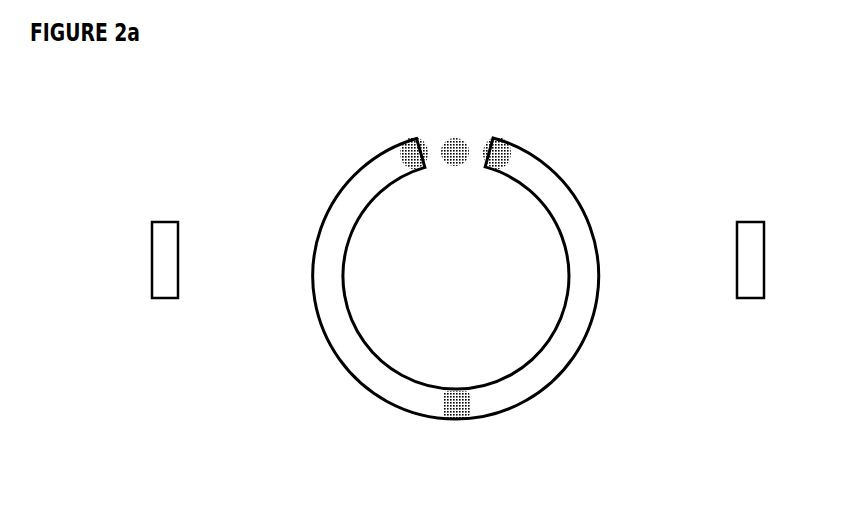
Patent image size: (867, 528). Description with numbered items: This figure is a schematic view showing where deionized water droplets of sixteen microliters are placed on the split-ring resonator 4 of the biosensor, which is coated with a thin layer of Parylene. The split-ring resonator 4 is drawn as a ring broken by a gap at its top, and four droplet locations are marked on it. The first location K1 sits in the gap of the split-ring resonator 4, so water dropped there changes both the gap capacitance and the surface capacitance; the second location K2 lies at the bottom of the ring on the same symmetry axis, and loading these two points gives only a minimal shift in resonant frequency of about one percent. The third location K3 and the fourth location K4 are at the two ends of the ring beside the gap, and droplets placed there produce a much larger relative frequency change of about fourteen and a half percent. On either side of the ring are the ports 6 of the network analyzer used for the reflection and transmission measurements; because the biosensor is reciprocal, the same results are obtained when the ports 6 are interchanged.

The split-ring resonator 4 is at (593, 228).
The port 6 is at (163, 222).
The Location—1 K1 is at (455, 150).
The Location—2 K2 is at (452, 413).
The Location—3 K3 is at (402, 157).
The Location—4 K4 is at (507, 162).